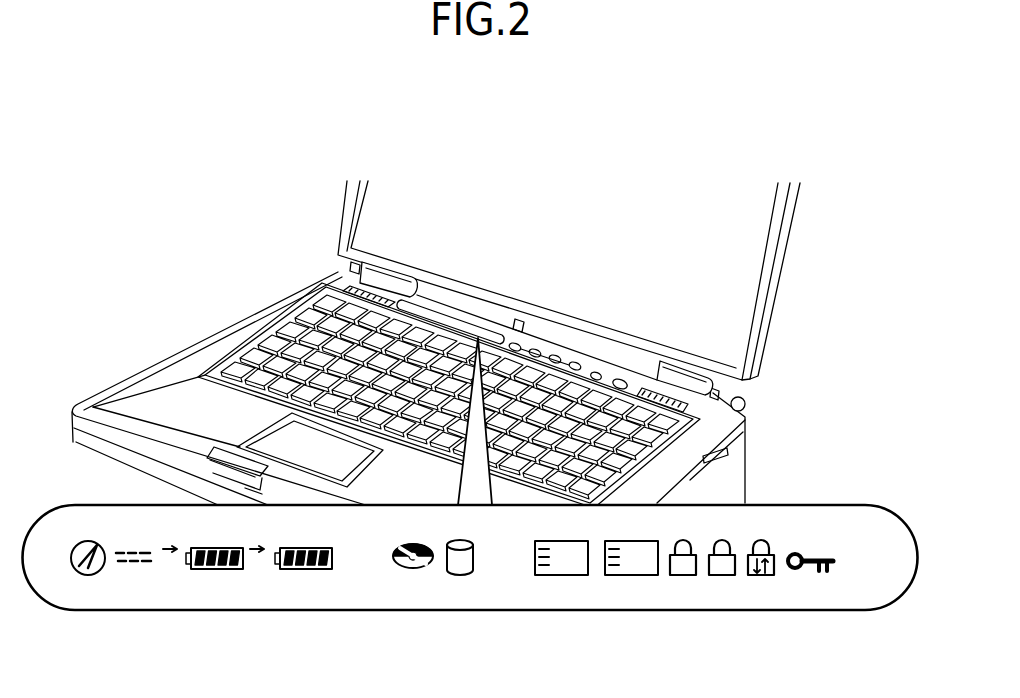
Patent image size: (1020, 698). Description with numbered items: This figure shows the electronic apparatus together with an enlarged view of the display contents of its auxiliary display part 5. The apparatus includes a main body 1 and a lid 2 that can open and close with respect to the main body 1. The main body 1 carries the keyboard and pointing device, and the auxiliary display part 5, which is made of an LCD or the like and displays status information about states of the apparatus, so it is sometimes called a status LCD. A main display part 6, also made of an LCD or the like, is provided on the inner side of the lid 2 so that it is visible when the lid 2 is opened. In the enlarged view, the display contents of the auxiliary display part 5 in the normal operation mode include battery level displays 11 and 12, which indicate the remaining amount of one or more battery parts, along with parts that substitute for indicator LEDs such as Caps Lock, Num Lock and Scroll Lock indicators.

The main body 1 is at (213, 333).
The lid 2 is at (787, 242).
The auxiliary display part 5 is at (470, 502).
The main display part 6 is at (731, 310).
The battery level display 11 is at (213, 570).
The battery level display 12 is at (302, 570).